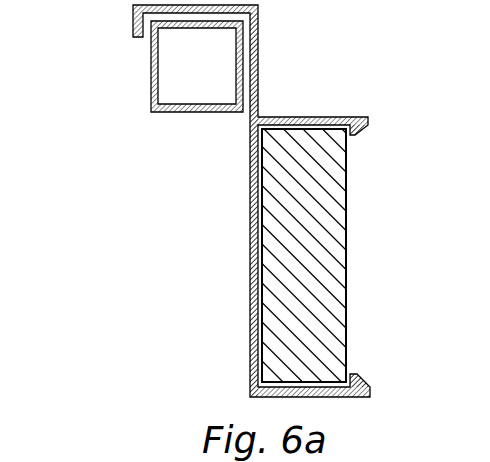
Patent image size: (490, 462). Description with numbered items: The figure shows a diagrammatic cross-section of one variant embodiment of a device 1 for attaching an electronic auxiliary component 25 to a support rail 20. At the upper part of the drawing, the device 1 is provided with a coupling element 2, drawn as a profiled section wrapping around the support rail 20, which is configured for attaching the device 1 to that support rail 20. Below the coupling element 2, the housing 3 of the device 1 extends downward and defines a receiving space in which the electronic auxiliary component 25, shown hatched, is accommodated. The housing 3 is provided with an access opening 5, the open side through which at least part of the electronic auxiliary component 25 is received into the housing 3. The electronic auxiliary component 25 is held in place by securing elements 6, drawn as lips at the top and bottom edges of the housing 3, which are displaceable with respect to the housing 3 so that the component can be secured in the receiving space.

The device 1 is at (248, 199).
The coupling element 2 is at (121, 23).
The housing 3 is at (236, 277).
The access opening 5 is at (362, 289).
The securing element 6 is at (366, 126).
The support rail 20 is at (177, 126).
The electronic auxiliary component 25 is at (360, 231).